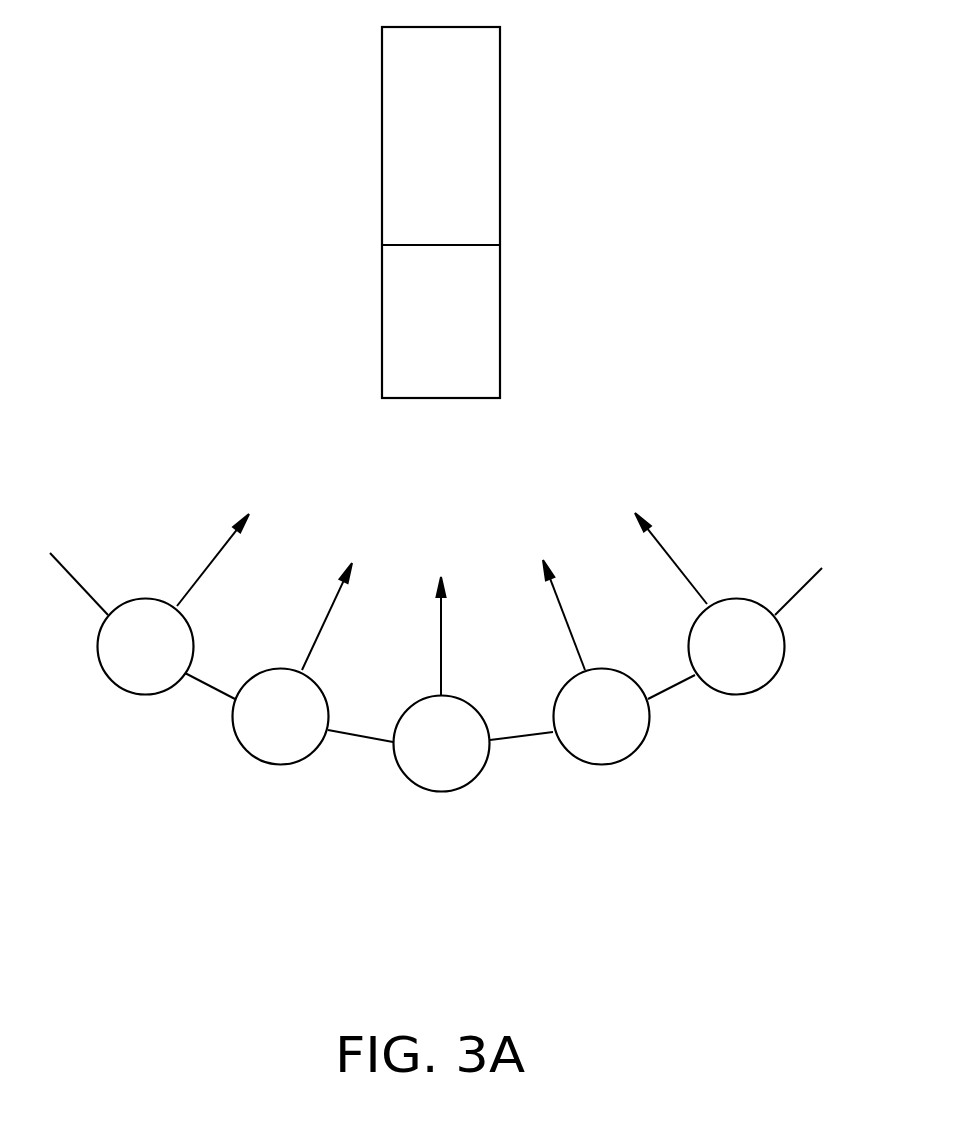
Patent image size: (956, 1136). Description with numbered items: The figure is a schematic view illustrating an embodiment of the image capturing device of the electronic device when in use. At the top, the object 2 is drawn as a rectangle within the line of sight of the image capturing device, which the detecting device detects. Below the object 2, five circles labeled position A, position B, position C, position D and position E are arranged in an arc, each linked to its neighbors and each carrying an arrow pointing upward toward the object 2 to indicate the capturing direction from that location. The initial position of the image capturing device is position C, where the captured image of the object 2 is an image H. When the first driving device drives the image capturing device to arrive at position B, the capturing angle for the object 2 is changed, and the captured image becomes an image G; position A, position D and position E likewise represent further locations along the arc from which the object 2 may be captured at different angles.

The object 2 is at (483, 92).
The position A is at (149, 606).
The position B is at (313, 664).
The position C is at (474, 684).
The position D is at (619, 662).
The position E is at (728, 604).